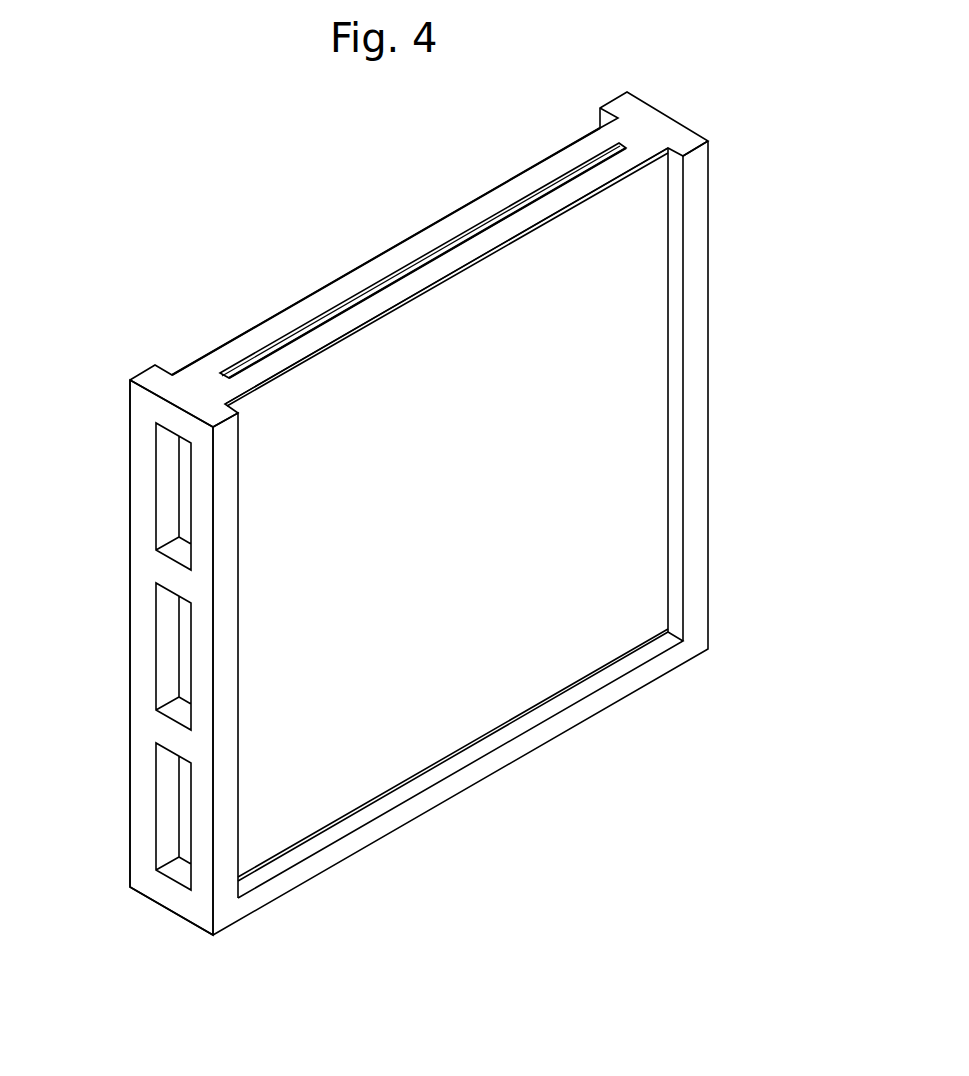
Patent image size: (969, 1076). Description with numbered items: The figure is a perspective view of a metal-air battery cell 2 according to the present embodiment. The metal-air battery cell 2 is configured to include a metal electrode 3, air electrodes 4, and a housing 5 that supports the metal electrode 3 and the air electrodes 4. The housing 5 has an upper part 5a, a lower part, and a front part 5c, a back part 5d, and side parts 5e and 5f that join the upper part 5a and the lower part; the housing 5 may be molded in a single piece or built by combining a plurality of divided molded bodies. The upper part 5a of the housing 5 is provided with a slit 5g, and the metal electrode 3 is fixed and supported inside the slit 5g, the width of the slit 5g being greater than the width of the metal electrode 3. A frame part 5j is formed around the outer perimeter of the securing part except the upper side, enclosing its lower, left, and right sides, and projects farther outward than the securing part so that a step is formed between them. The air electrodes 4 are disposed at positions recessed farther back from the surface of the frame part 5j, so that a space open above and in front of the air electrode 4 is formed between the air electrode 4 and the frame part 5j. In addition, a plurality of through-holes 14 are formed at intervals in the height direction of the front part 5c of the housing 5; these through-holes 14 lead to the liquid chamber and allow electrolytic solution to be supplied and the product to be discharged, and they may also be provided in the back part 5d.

The metal-air battery cell 2 is at (703, 93).
The metal electrode 3 is at (417, 262).
The air electrodes 4 is at (648, 268).
The housing 5 is at (642, 120).
The upper part 5a is at (186, 383).
The front part 5c is at (148, 455).
The back part 5d is at (712, 197).
The side part 5e is at (645, 500).
The side part 5f is at (336, 272).
The slit 5g is at (268, 345).
The frame part 5j is at (230, 808).
The through-holes 14 is at (160, 522).